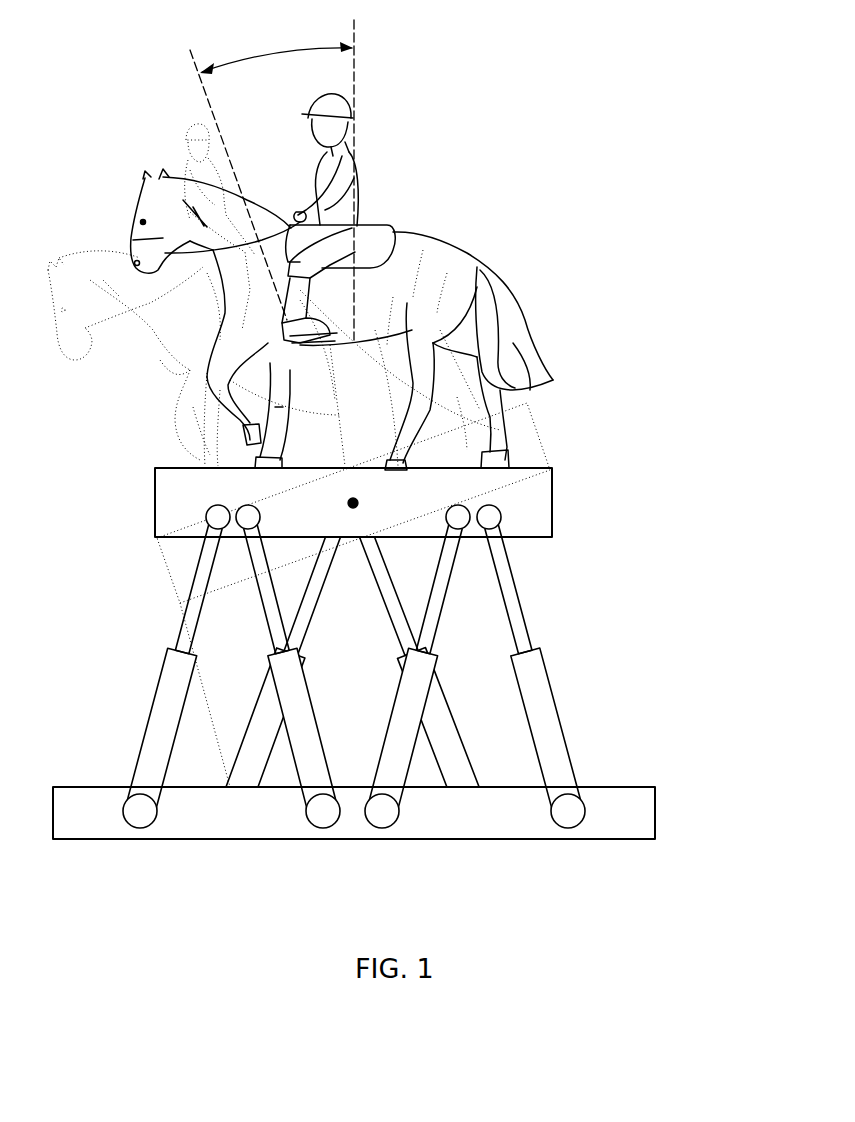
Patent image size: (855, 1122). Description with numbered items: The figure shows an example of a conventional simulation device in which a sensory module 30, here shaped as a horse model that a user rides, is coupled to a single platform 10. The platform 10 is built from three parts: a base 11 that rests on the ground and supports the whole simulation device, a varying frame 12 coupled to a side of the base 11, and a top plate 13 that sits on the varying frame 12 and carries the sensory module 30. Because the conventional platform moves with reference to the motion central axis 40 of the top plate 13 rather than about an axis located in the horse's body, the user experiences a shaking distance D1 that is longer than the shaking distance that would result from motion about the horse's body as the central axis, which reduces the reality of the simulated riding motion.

The platform 10 is at (740, 503).
The base 11 is at (655, 812).
The varying frame 12 is at (550, 683).
The top plate 13 is at (552, 501).
The sensory module 30 is at (453, 243).
The motion central axis 40 is at (345, 503).
The user shaking distance D1 is at (272, 180).